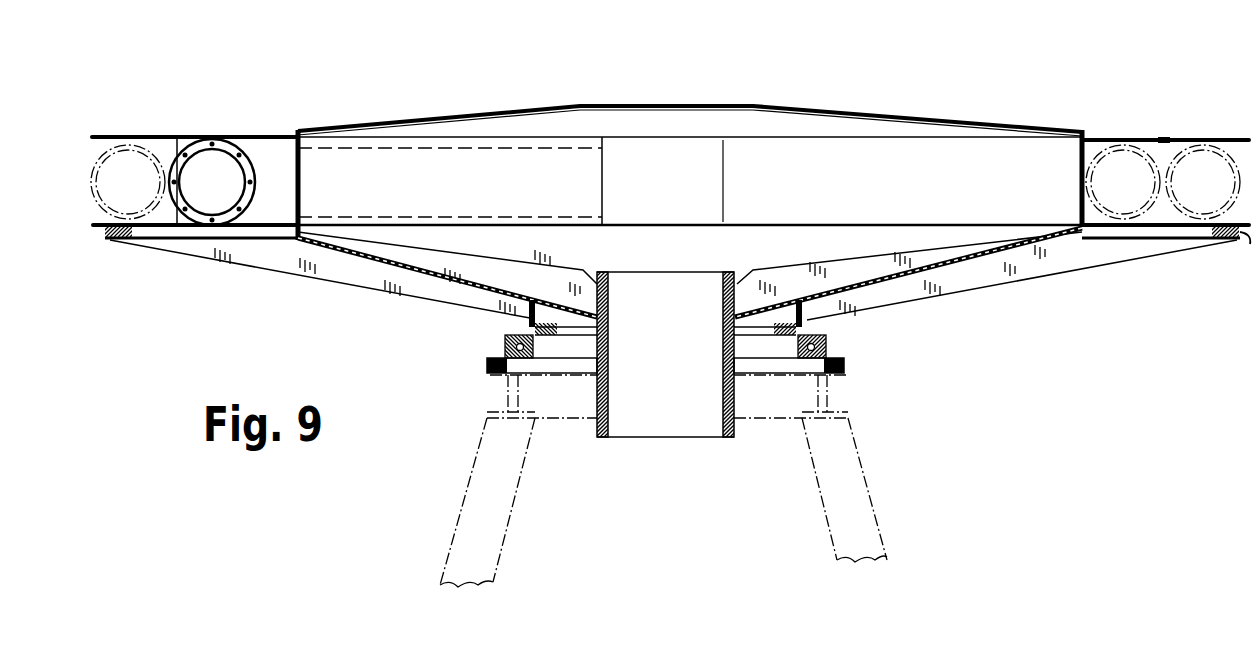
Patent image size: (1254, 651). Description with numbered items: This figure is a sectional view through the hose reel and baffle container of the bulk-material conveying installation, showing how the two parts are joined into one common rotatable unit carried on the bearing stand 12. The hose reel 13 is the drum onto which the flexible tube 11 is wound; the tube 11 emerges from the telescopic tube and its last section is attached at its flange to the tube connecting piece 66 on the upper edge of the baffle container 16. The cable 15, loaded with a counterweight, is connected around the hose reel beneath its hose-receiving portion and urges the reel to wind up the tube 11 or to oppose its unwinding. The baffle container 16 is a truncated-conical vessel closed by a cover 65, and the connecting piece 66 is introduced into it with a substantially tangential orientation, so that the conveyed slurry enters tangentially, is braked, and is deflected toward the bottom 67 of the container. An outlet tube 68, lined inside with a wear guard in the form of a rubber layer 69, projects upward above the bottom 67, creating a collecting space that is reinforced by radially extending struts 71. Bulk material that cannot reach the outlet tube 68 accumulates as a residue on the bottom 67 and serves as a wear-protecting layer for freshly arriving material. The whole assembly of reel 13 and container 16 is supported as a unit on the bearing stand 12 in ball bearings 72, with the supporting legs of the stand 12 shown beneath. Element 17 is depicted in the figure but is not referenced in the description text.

The flexible tube 11 is at (1158, 328).
The bearing stand 12 is at (853, 485).
The hose reel 13 is at (1152, 132).
The cable 15 is at (1243, 248).
The baffle container 16 is at (943, 112).
The central tube 17 is at (663, 390).
The cover 65 is at (805, 112).
The tube connecting piece 66 is at (258, 160).
The bottom of the container 67 is at (950, 247).
The outlet tube 68 is at (597, 400).
The rubber layer 69 is at (725, 400).
The radially extending struts 71 is at (843, 262).
The ball bearings 72 is at (828, 345).